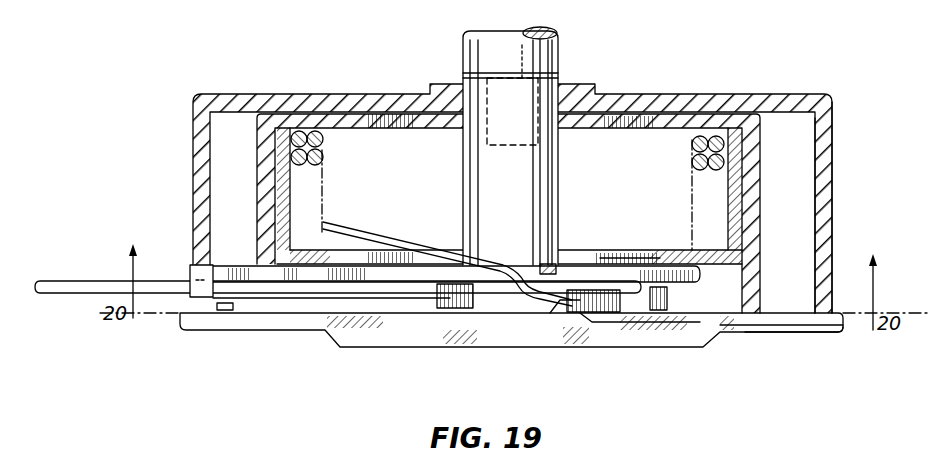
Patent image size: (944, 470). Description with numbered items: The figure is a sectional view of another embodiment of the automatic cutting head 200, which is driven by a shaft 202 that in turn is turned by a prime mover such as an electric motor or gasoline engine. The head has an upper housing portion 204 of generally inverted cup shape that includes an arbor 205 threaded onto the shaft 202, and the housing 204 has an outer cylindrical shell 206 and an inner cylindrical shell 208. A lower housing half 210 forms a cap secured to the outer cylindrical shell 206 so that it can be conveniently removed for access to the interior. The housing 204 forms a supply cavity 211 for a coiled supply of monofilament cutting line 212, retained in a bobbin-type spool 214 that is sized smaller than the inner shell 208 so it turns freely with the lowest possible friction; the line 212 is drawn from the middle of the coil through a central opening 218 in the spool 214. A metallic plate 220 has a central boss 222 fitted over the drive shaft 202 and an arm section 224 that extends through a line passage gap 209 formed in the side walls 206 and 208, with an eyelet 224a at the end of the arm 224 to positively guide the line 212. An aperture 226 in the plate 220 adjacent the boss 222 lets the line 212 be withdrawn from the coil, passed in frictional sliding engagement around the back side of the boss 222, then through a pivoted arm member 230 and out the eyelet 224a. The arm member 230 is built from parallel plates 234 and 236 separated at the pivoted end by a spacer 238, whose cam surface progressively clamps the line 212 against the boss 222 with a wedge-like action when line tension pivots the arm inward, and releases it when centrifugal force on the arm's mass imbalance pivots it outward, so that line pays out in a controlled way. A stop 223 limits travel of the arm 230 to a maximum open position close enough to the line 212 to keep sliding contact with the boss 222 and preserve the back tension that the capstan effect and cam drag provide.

The automatic cutting head 200 is at (263, 72).
The shaft 202 is at (566, 55).
The upper housing portion 204 is at (726, 96).
The arbor 205 is at (521, 193).
The outer cylindrical shell 206 is at (834, 182).
The inner cylindrical shell 208 is at (770, 222).
The line passage gap 209 is at (224, 312).
The lower housing half 210 is at (690, 340).
The supply cavity 211 is at (392, 142).
The monofilament cutting line 212 is at (320, 160).
The bobbin-type spool 214 is at (668, 140).
The central opening 218 is at (632, 256).
The metallic plate 220 is at (668, 295).
The central boss 222 is at (424, 305).
The stop 223 is at (738, 325).
The arm section 224 is at (203, 262).
The eyelet 224a is at (196, 300).
The aperture 226 is at (510, 268).
The pivoted arm member 230 is at (590, 320).
The parallel plate 234 is at (592, 246).
The parallel plate 236 is at (608, 322).
The spacer 238 is at (553, 316).